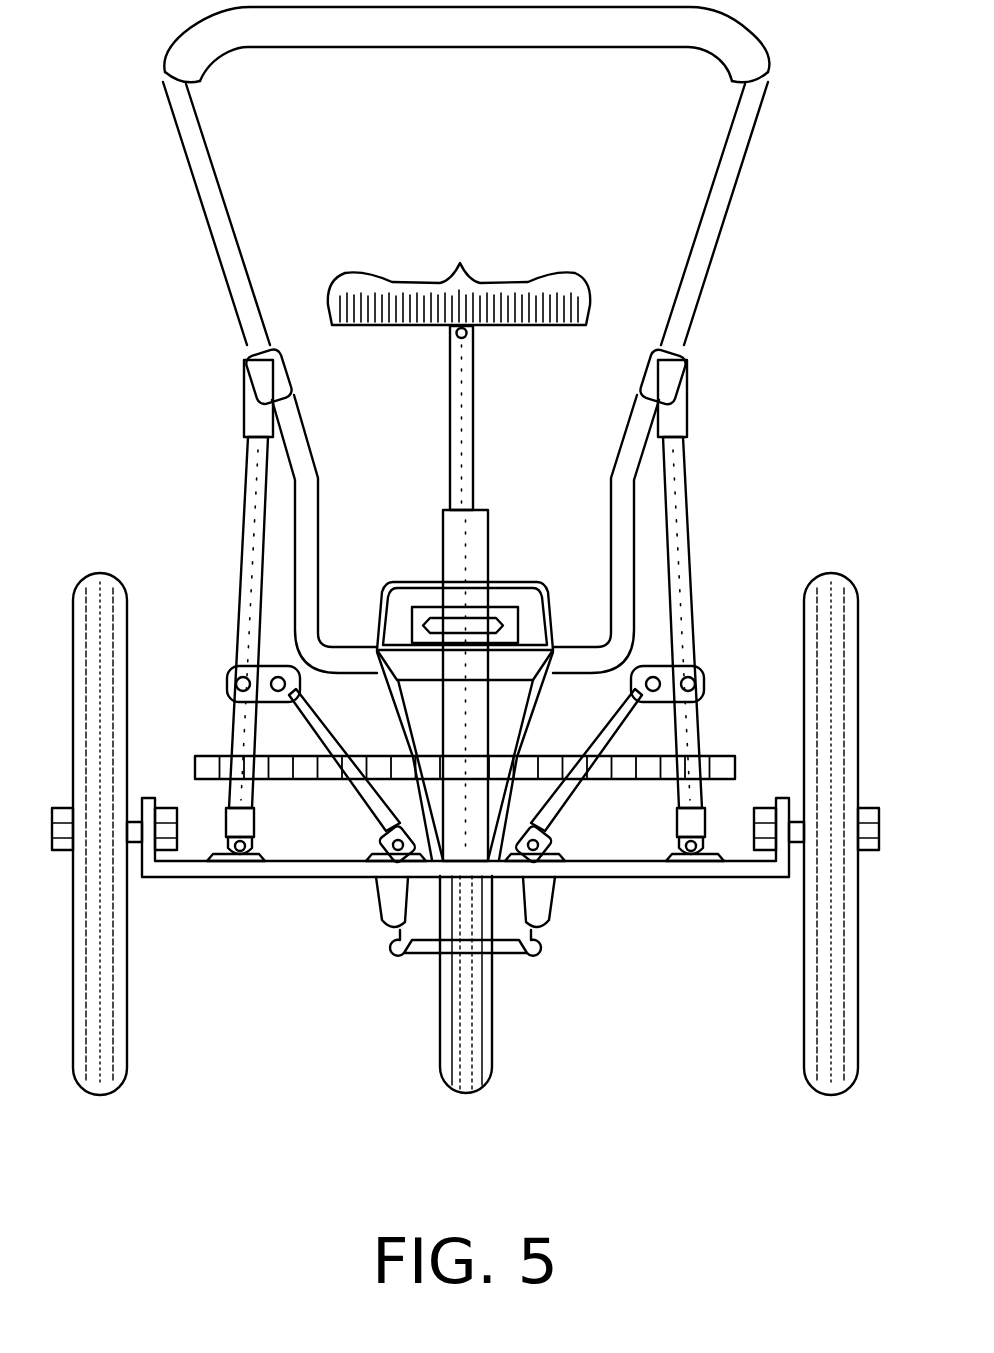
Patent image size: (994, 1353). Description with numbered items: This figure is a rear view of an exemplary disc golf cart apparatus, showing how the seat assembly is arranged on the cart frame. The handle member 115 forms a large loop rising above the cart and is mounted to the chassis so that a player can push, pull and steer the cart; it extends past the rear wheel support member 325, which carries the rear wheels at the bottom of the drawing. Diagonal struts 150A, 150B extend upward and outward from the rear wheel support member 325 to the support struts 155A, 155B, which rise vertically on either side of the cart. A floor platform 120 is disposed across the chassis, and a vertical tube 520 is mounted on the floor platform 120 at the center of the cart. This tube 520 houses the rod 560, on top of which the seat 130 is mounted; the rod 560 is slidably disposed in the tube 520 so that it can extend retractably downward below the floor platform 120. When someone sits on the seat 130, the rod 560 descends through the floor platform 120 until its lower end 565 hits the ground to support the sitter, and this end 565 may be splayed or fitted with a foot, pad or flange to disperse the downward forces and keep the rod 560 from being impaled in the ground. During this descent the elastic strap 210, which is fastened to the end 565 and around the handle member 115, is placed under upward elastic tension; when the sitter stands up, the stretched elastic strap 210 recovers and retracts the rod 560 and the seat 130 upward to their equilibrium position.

The handle member 115 is at (748, 184).
The seat 130 is at (532, 278).
The rod 560 is at (473, 423).
The vertical tube 520 is at (477, 560).
The support strut 155B is at (243, 505).
The support strut 155A is at (684, 512).
The diagonal strut 150A is at (356, 801).
The diagonal strut 150B is at (619, 806).
The floor platform 120 is at (193, 776).
The rear wheel support member 325 is at (676, 878).
The elastic strap 210 is at (392, 908).
The end of rod 565 is at (422, 957).